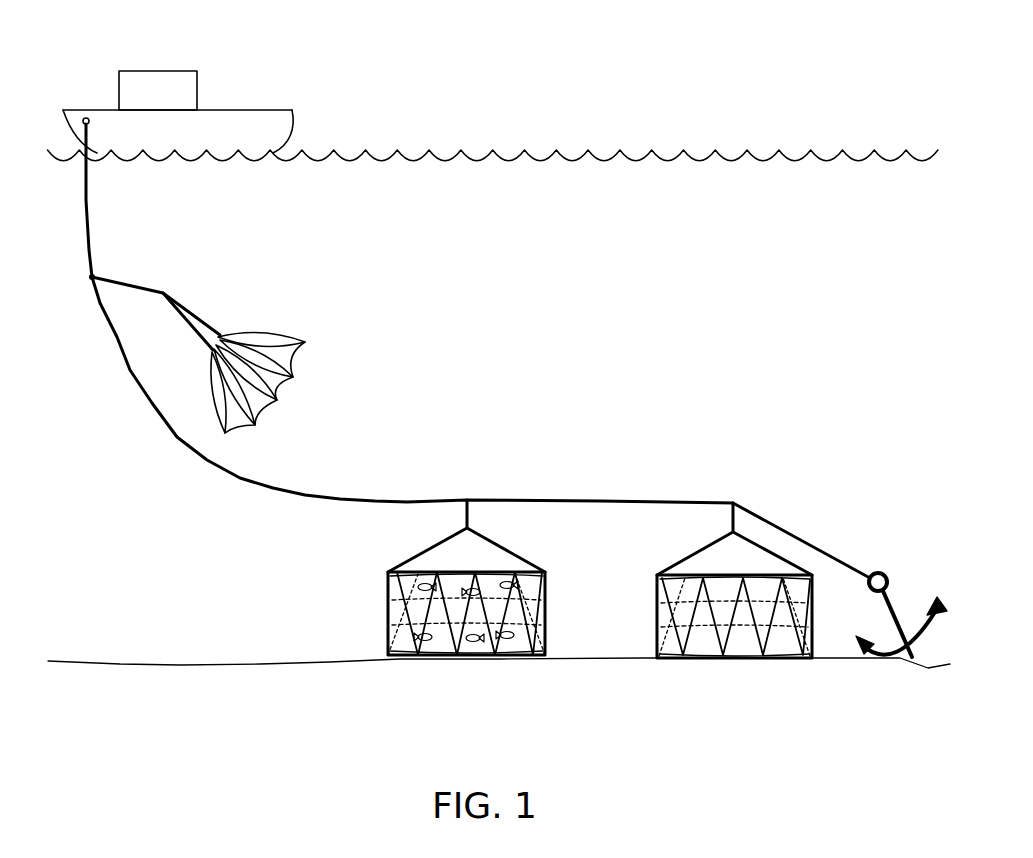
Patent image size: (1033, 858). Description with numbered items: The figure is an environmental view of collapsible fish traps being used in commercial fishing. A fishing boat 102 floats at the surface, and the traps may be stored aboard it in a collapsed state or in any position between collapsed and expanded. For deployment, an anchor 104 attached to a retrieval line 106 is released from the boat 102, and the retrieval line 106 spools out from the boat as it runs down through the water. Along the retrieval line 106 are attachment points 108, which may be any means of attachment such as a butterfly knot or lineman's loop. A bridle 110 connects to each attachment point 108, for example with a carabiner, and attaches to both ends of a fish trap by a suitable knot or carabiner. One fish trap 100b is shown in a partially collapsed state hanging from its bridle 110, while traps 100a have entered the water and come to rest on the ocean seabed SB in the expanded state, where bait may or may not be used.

The fishing boat 102 is at (247, 110).
The anchor 104 is at (895, 603).
The retrieval line 106 is at (163, 430).
The attachment point 108 is at (92, 278).
The bridle 110 is at (125, 280).
The fish trap in expanded state 100a is at (657, 628).
The fish trap in partially collapsed state 100b is at (262, 332).
The seabed SB is at (235, 722).